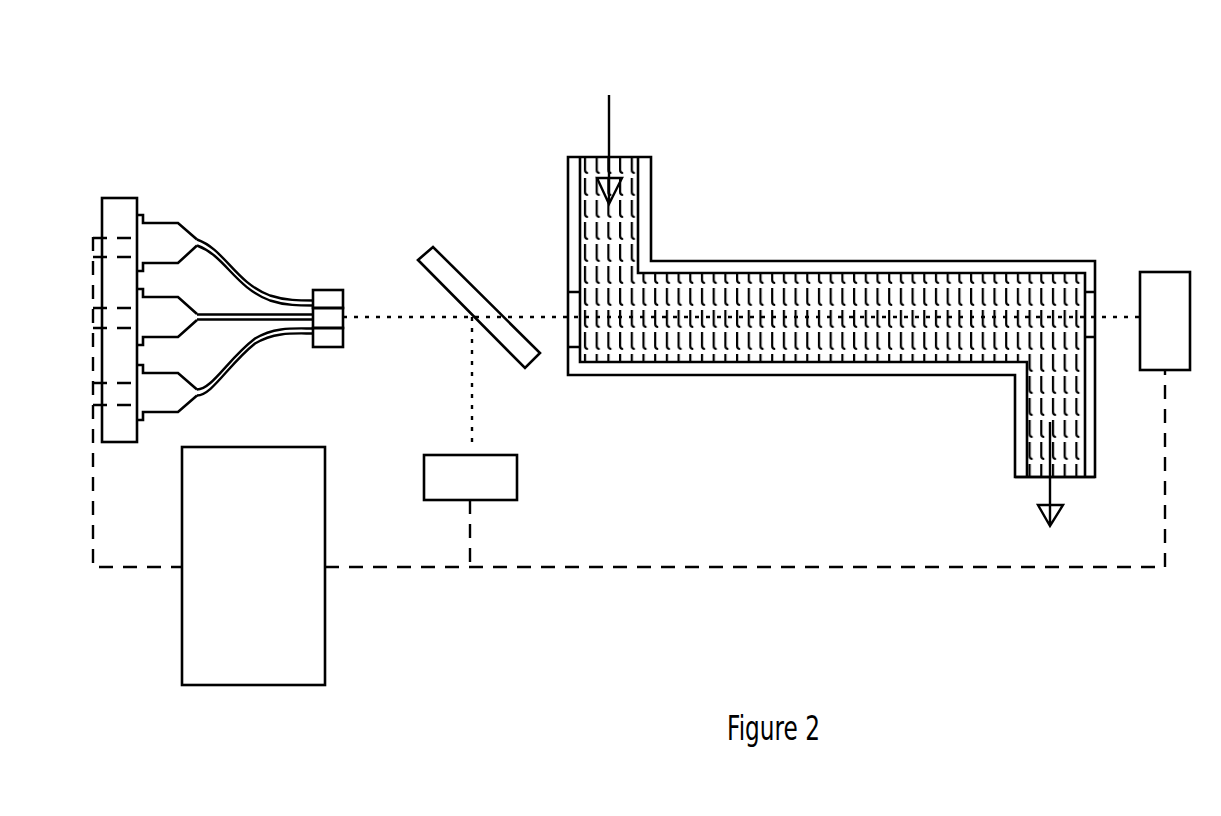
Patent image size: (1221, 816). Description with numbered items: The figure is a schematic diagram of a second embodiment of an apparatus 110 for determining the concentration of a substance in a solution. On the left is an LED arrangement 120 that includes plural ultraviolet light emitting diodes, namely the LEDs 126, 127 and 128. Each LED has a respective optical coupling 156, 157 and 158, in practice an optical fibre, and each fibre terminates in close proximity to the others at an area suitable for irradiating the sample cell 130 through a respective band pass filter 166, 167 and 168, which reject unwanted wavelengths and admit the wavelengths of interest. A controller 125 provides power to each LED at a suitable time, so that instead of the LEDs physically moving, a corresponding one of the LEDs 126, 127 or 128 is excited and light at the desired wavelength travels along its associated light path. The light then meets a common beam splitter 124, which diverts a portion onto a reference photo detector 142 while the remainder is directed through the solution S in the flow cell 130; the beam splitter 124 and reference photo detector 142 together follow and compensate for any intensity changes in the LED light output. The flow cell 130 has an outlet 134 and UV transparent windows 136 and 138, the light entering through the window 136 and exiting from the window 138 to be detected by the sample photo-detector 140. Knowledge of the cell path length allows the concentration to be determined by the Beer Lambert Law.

The apparatus 110 is at (786, 53).
The LED arrangement 120 is at (360, 119).
The beam splitter 124 is at (453, 278).
The controller 125 is at (270, 652).
The LED 126 is at (165, 243).
The LED 127 is at (173, 323).
The LED 128 is at (182, 397).
The sample cell 130 is at (877, 290).
The outlet 134 is at (1032, 478).
The window 136 is at (565, 302).
The window 138 is at (1090, 305).
The sample photo-detector 140 is at (1165, 285).
The reference photo detector 142 is at (460, 483).
The optical coupling 156 is at (194, 238).
The optical coupling 157 is at (238, 316).
The optical coupling 158 is at (264, 328).
The band pass filter 166 is at (335, 297).
The band pass filter 167 is at (337, 320).
The band pass filter 168 is at (338, 337).